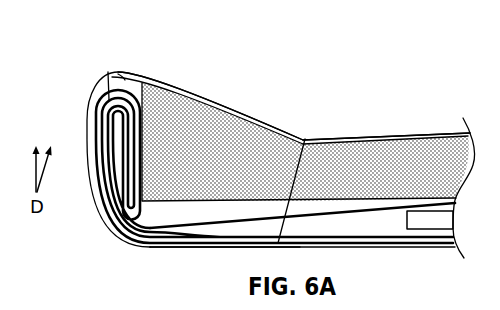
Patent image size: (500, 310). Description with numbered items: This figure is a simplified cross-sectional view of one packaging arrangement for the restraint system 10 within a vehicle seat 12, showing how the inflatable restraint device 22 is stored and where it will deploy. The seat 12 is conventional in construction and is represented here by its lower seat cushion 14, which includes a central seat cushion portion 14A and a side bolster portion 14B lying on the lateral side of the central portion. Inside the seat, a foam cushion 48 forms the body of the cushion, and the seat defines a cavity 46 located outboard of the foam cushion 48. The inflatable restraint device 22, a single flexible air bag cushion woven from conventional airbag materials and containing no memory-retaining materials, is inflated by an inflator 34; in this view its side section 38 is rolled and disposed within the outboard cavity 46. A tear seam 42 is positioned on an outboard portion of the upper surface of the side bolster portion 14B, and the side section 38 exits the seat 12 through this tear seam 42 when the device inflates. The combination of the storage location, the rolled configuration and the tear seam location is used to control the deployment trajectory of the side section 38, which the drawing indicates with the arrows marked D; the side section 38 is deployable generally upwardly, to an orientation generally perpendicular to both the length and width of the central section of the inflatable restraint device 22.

The restraint system 10 is at (150, 261).
The seat 12 is at (277, 113).
The lower seat cushion 14 is at (490, 301).
The central seat cushion portion 14A is at (385, 132).
The side bolster portion 14B is at (197, 90).
The inflatable restraint device 22 is at (312, 206).
The inflator 34 is at (432, 222).
The side sections 38 is at (105, 160).
The tear seam 42 is at (108, 72).
The cavity 46 is at (125, 80).
The foam cushion 48 is at (428, 150).